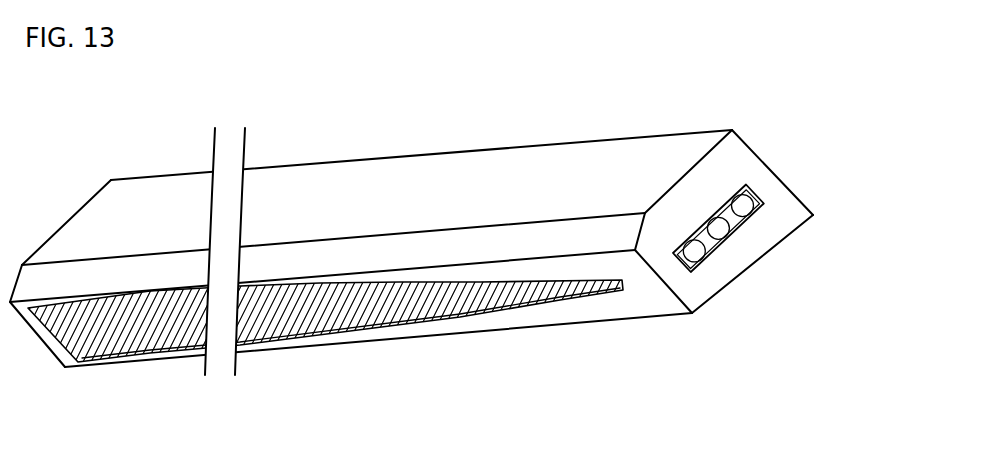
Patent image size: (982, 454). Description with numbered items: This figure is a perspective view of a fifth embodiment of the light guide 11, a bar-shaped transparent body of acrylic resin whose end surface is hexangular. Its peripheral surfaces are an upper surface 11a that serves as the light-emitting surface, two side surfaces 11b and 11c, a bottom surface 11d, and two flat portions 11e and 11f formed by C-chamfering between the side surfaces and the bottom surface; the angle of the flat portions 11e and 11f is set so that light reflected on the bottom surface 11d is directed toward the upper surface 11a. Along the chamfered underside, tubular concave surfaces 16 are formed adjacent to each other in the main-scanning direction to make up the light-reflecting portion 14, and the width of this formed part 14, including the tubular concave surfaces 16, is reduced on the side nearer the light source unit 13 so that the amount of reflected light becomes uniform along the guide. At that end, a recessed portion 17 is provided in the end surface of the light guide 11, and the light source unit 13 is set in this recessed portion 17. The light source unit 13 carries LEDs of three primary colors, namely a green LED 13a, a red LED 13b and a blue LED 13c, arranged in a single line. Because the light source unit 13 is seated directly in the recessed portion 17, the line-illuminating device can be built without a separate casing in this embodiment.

The light guide 11 is at (300, 147).
The upper surface 11a is at (767, 160).
The side surface 11b is at (483, 160).
The side surface 11c is at (757, 277).
The bottom surface 11d is at (600, 317).
The flat portion 11e is at (575, 238).
The flat portion 11f is at (708, 303).
The light source unit 13 is at (772, 193).
The LED 13a is at (746, 186).
The LED 13b is at (715, 218).
The LED 13c is at (683, 243).
The light-reflecting portion 14 is at (393, 317).
The tubular concave surface 16 is at (312, 330).
The recessed portion 17 is at (753, 215).